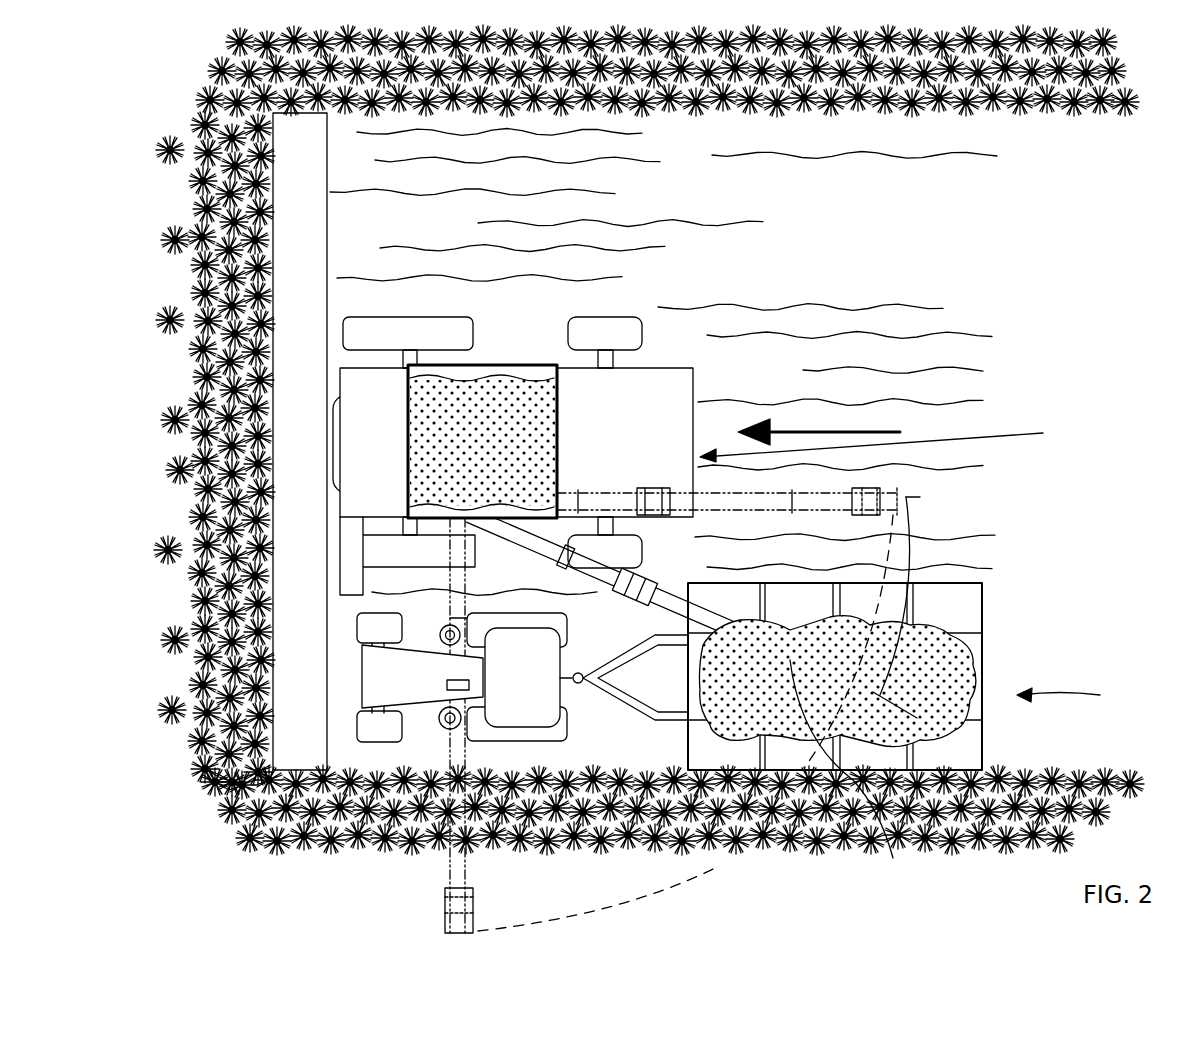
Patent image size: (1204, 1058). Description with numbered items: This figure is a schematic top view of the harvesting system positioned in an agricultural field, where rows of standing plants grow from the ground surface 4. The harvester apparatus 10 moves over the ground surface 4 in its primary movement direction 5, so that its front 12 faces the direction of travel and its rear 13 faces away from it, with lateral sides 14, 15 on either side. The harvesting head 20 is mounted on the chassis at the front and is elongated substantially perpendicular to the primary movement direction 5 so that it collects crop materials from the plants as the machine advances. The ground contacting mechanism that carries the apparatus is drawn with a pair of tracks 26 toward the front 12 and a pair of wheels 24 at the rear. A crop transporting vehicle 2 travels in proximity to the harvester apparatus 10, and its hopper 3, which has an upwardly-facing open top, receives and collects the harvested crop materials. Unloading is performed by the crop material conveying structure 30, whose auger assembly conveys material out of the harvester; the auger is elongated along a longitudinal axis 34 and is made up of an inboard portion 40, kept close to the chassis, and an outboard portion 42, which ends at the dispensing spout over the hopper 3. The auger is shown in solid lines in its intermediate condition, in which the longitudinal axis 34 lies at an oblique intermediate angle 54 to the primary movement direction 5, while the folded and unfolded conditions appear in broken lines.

The crop transporting vehicle 2 is at (1068, 695).
The hopper 3 is at (982, 628).
The ground surface 4 is at (942, 337).
The primary movement direction 5 is at (878, 432).
The harvester apparatus 10 is at (692, 422).
The front 12 is at (342, 262).
The rear 13 is at (890, 441).
The lateral side 14 is at (344, 749).
The lateral side 15 is at (338, 146).
The harvesting head 20 is at (278, 602).
The wheels 24 is at (605, 316).
The tracks 26 is at (412, 318).
The crop material conveying structure 30 is at (933, 510).
The longitudinal axis 34 is at (1030, 497).
The inboard portion 40 is at (545, 535).
The outboard portion 42 is at (849, 774).
The intermediate angle 54 is at (905, 607).